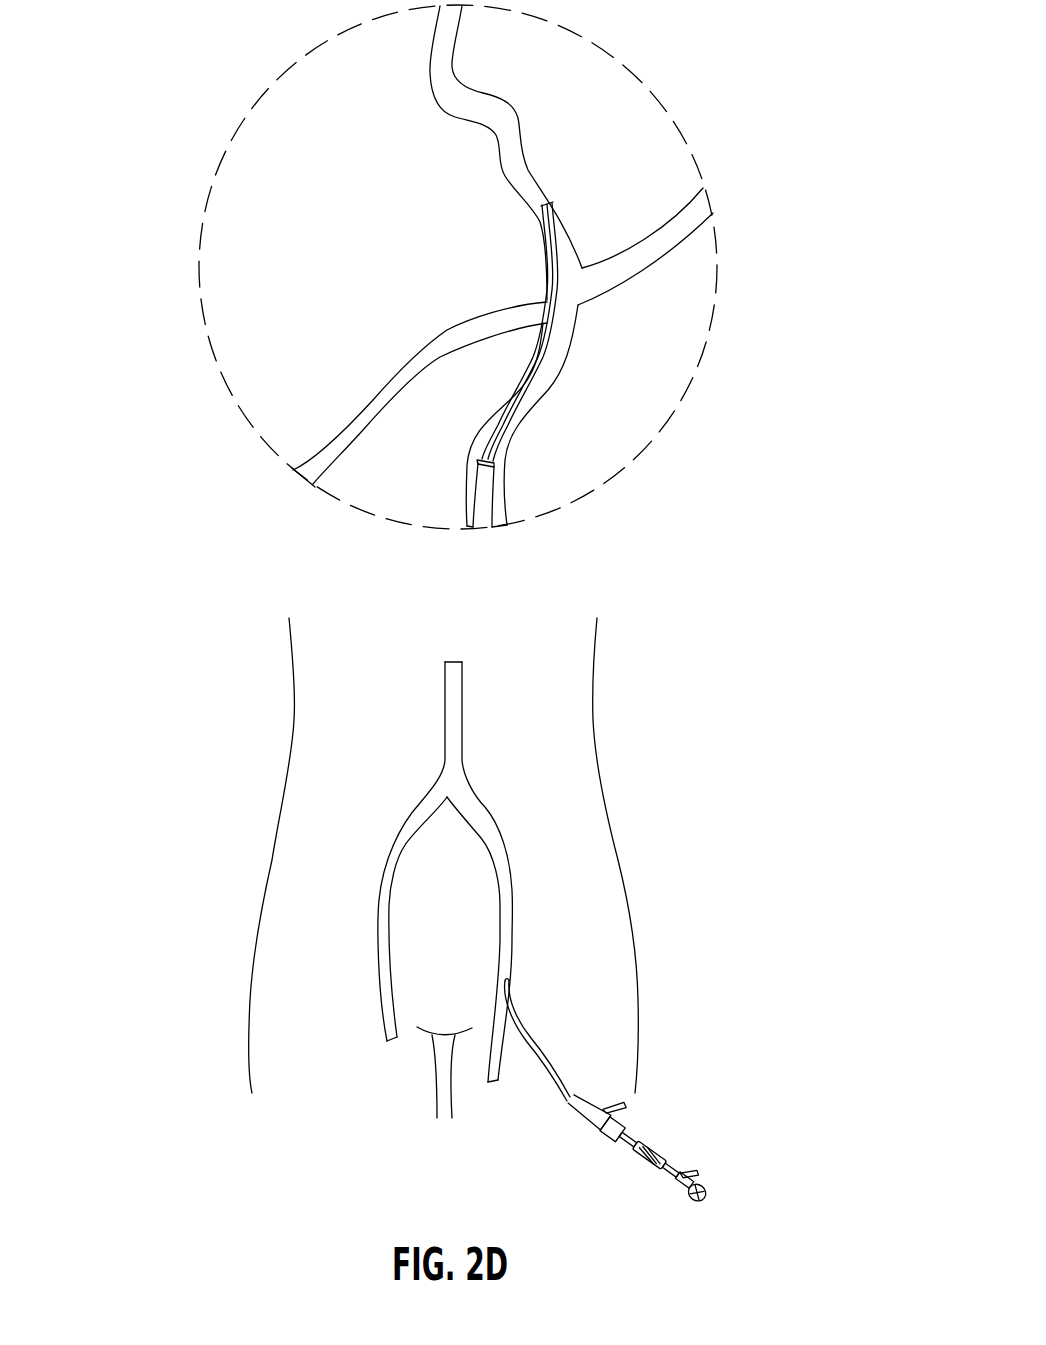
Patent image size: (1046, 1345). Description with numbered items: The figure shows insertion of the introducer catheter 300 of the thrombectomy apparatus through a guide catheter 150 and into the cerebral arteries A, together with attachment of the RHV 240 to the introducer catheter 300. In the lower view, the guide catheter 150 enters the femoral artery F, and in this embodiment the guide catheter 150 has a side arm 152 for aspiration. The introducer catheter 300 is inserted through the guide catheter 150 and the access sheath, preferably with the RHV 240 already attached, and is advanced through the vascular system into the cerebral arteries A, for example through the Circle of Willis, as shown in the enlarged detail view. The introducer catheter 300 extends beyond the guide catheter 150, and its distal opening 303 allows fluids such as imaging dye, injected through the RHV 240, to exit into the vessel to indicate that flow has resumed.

The introducer catheter 300 is at (555, 342).
The distal opening 303 is at (552, 191).
The guide catheter 150 is at (585, 1115).
The side arm 152 is at (622, 1103).
The RHV 240 is at (652, 1151).
The femoral artery F is at (512, 942).
The cerebral arteries A is at (590, 421).